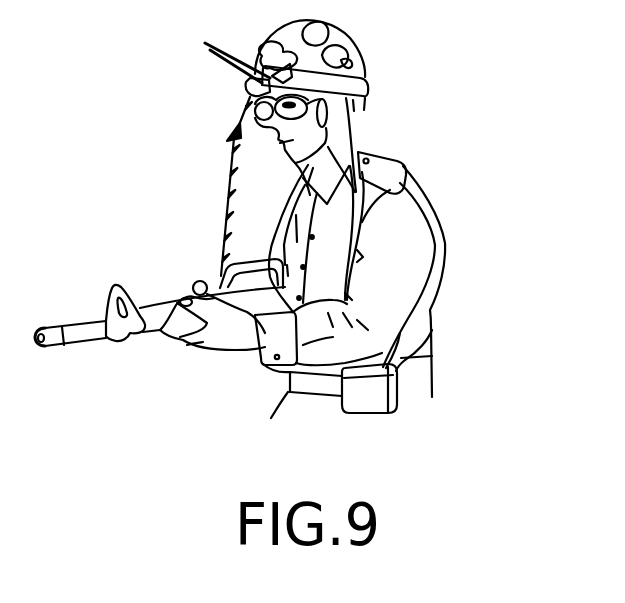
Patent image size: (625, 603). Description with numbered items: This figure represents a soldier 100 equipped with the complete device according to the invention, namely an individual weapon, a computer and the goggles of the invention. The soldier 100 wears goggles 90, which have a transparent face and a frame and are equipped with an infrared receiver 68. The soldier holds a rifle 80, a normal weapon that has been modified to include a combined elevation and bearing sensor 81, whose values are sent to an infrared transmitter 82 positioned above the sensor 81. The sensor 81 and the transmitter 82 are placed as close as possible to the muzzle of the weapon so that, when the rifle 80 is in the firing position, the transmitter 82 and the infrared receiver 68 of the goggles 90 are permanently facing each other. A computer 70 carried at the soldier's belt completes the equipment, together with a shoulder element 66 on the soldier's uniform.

The shoulder epaulet 66 is at (398, 165).
The infrared receiver 68 is at (240, 90).
The computer 70 is at (380, 402).
The weapon 80 is at (92, 331).
The combined elevation and bearing sensor 81 is at (57, 346).
The infrared transmitter 82 is at (194, 283).
The goggles 90 is at (308, 124).
The soldier 100 is at (418, 314).